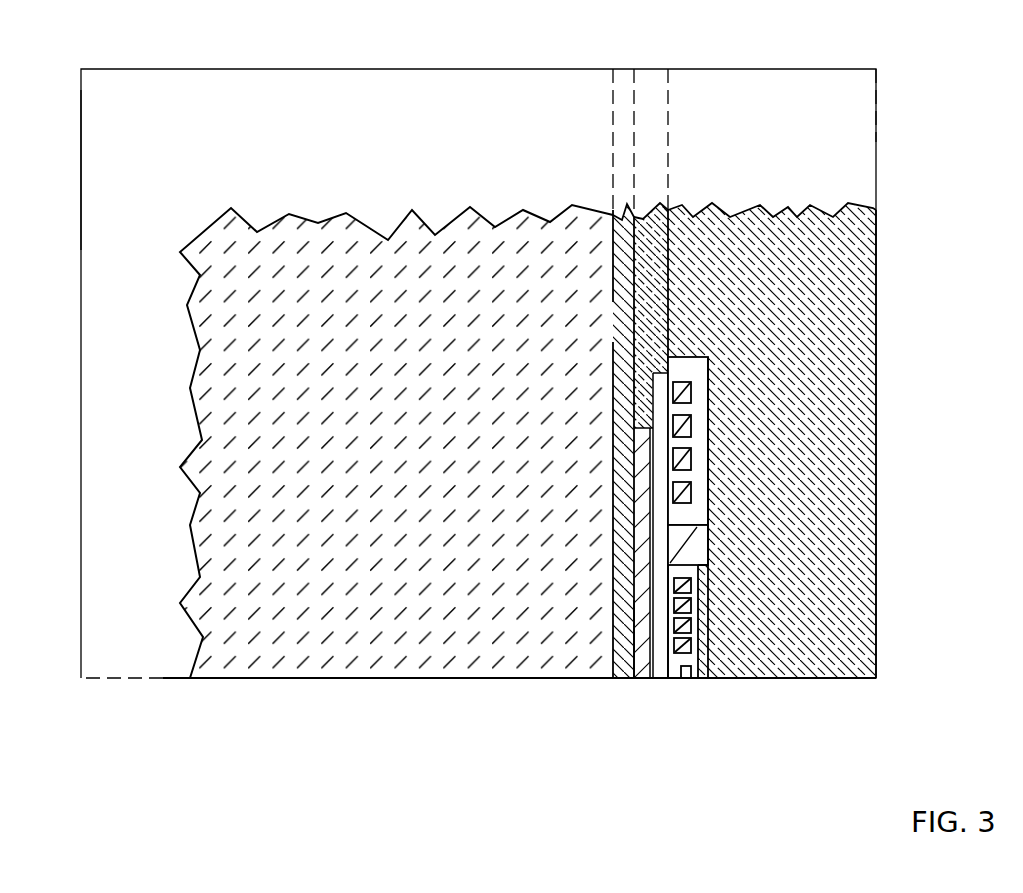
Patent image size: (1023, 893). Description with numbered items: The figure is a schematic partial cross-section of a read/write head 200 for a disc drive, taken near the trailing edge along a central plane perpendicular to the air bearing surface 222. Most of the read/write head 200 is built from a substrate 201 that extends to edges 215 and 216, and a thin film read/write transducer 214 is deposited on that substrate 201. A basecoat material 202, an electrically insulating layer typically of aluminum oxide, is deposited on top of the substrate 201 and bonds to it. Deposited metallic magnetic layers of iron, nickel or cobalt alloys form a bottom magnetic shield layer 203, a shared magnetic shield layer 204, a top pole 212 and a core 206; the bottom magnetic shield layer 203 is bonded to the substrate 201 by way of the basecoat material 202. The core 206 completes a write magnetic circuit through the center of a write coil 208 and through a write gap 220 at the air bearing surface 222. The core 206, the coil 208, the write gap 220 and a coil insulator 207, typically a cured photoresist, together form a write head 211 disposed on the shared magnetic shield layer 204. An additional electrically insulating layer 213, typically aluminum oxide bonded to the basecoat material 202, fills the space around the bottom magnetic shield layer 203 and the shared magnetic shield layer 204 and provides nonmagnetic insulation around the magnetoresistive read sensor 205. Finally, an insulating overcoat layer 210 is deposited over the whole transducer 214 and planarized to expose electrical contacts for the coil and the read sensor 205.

The read/write head 200 is at (953, 143).
The substrate 201 is at (403, 461).
The basecoat material 202 is at (623, 217).
The bottom magnetic shield layer 203 is at (640, 678).
The shared magnetic shield layer 204 is at (662, 678).
The magnetoresistive read sensor 205 is at (652, 696).
The core 206 is at (688, 545).
The coil insulator 207 is at (698, 372).
The write coil 208 is at (676, 463).
The overcoat layer 210 is at (760, 205).
The write head 211 is at (906, 332).
The top pole 212 is at (705, 678).
The electrically insulating layer 213 is at (645, 219).
The thin film read/write transducer 214 is at (604, 318).
The edge 215 is at (143, 69).
The edge 216 is at (81, 168).
The write gap 220 is at (684, 696).
The air bearing surface 222 is at (397, 678).